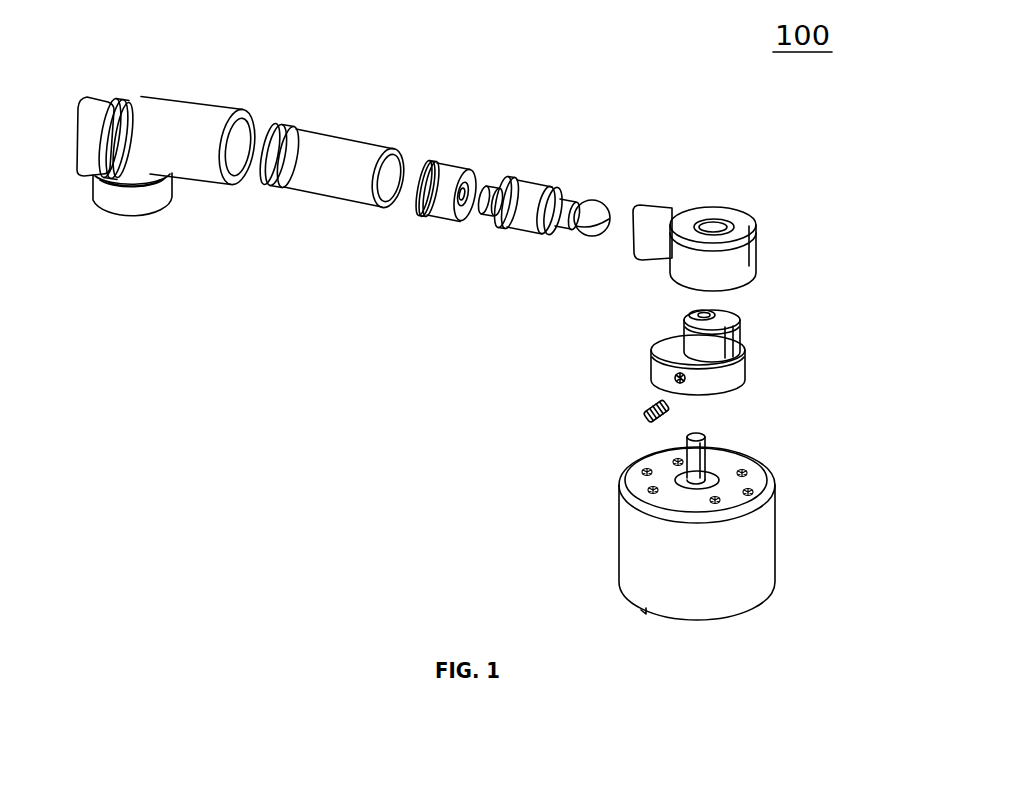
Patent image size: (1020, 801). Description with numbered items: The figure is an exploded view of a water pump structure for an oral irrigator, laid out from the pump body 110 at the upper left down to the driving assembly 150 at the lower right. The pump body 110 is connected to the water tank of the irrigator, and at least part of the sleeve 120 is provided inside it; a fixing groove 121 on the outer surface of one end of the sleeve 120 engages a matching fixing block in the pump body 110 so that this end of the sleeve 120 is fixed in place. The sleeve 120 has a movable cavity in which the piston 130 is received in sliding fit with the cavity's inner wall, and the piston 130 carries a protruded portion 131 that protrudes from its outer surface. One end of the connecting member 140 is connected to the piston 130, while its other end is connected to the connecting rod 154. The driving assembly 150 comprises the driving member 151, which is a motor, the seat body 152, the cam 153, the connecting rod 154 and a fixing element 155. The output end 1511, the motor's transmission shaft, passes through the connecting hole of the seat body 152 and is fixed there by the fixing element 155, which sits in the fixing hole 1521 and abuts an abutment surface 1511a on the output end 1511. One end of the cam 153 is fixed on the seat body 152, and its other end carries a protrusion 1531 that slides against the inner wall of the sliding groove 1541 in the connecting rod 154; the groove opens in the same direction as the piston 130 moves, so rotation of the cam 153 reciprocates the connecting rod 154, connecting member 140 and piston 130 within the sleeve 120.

The pump body 110 is at (177, 117).
The sleeve 120 is at (325, 142).
The fixing groove 121 is at (280, 187).
The piston 130 is at (452, 170).
The protruded portion 131 is at (427, 208).
The connecting member 140 is at (547, 193).
The driving assembly 150 is at (510, 452).
The driving member 151 is at (687, 522).
The output end 1511 is at (680, 457).
The abutment surface 1511a is at (613, 453).
The seat body 152 is at (687, 365).
The fixing hole 1521 is at (655, 360).
The cam 153 is at (706, 322).
The protrusion 1531 is at (697, 312).
The connecting rod 154 is at (737, 232).
The sliding groove 1541 is at (720, 225).
The fixing element 155 is at (643, 405).